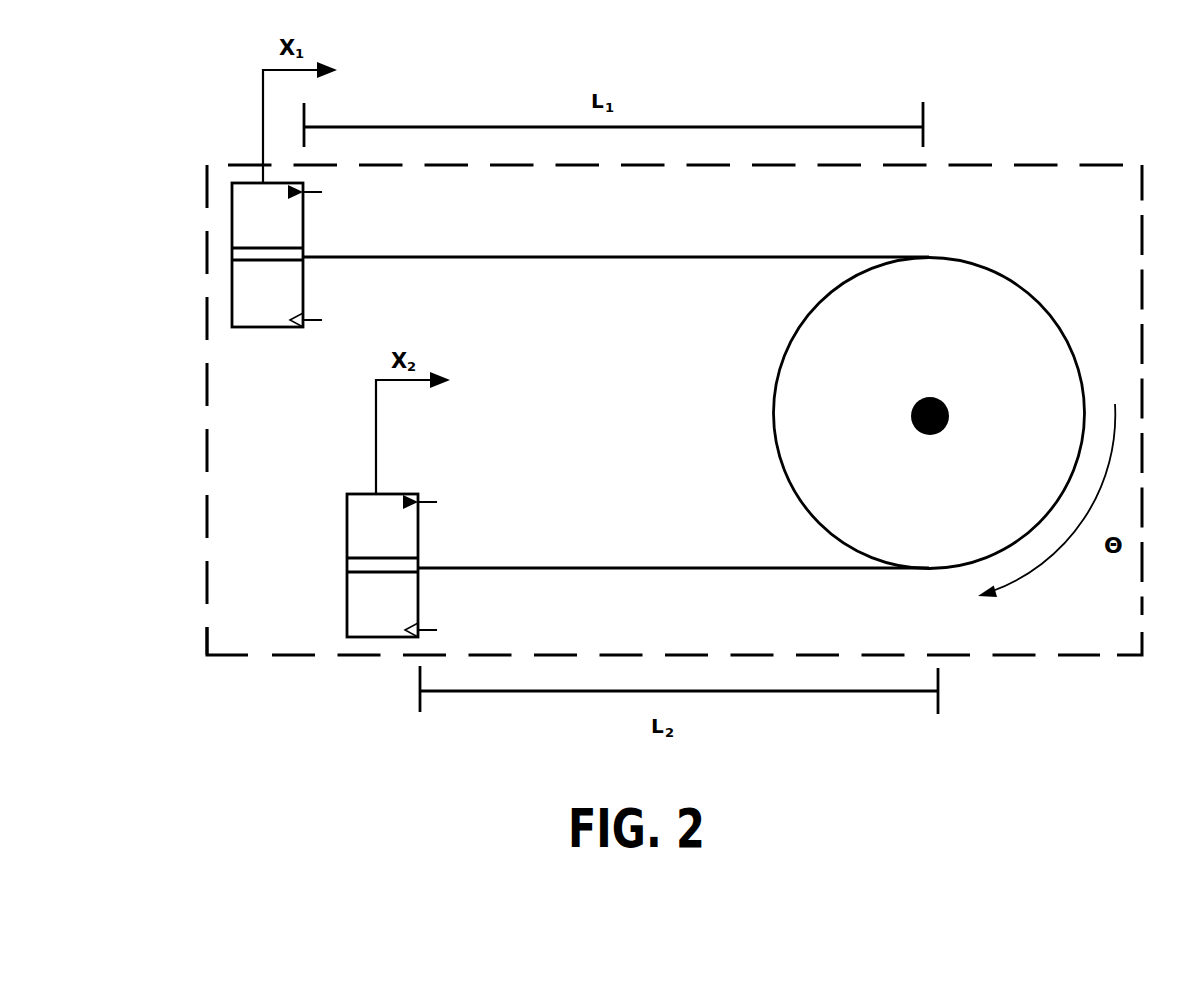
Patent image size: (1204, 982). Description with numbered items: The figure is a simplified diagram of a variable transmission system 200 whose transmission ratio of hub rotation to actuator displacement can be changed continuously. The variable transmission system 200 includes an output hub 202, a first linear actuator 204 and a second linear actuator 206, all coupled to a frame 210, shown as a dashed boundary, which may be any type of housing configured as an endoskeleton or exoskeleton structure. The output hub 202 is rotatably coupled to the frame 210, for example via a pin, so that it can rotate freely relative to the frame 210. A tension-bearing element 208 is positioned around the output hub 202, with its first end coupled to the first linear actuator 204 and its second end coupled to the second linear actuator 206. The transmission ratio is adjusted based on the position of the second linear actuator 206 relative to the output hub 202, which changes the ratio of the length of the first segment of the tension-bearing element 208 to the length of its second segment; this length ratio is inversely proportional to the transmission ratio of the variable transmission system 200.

The variable transmission system 200 is at (987, 87).
The output hub 202 is at (1023, 287).
The first linear actuator 204 is at (305, 205).
The second linear actuator 206 is at (345, 503).
The tension-bearing element 208 is at (545, 258).
The frame 210 is at (204, 577).